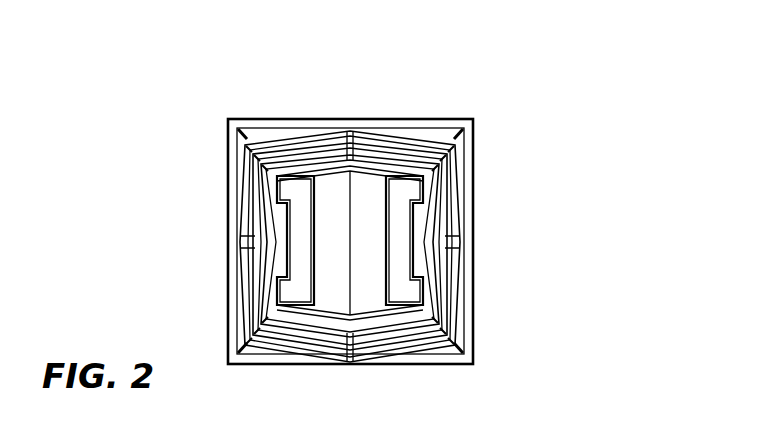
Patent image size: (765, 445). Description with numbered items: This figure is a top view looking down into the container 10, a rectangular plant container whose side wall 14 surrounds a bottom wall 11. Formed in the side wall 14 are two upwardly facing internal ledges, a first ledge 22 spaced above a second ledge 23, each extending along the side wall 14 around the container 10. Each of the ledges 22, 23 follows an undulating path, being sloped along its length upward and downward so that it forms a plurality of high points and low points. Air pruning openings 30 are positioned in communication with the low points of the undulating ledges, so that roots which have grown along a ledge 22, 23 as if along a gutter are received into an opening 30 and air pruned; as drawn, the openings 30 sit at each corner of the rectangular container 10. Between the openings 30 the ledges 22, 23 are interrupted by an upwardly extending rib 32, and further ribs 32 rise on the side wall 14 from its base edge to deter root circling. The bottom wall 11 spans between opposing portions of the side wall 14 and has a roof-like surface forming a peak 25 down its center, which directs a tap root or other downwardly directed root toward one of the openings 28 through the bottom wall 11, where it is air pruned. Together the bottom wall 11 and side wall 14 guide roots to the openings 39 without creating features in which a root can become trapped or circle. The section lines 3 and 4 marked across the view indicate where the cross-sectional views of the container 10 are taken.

The section line 3- 3 is at (166, 59).
The section line 4- 4 is at (528, 187).
The container 10 is at (512, 128).
The bottom wall 11 is at (378, 296).
The side wall 14 is at (245, 151).
The first ledge 22 is at (408, 140).
The second ledge 23 is at (376, 155).
The peak 25 is at (318, 158).
The openings through the bottom wall 28 is at (257, 193).
The air pruning openings 30 is at (450, 148).
The upwardly extending rib 32 is at (350, 138).
The openings 39 is at (298, 293).